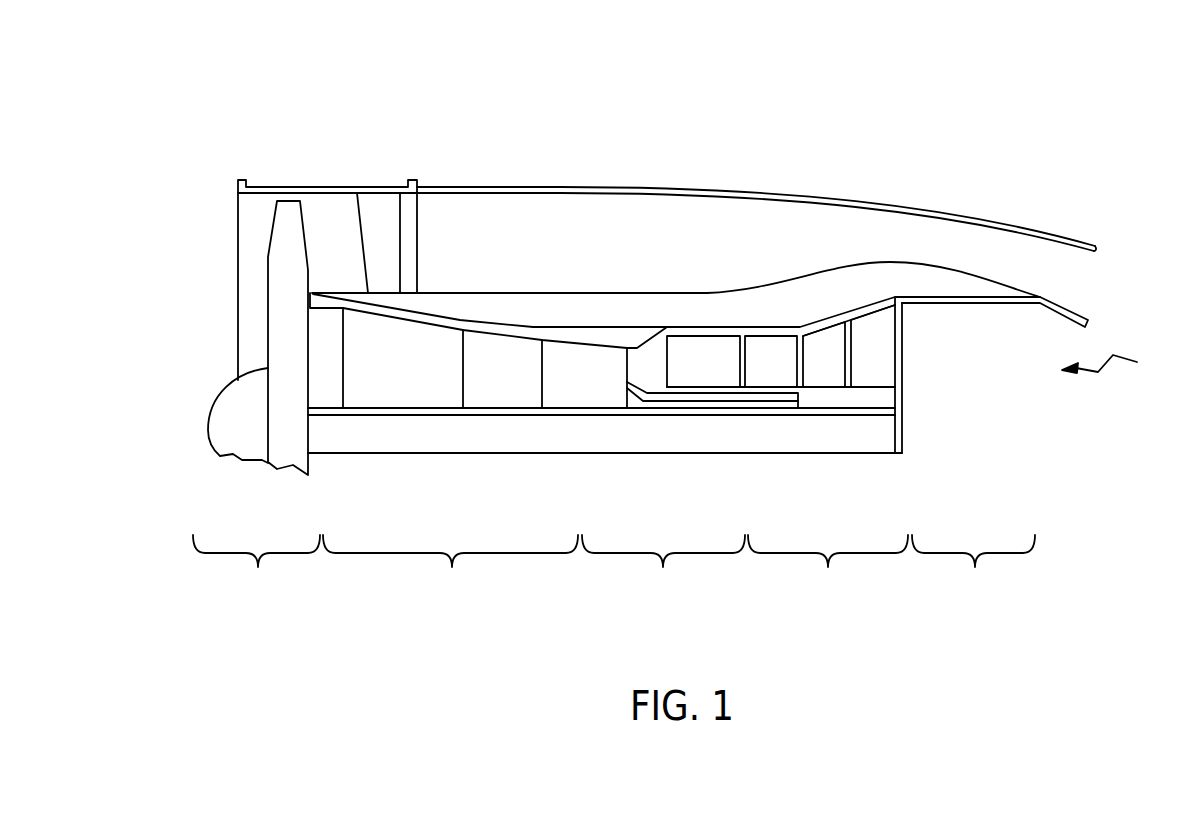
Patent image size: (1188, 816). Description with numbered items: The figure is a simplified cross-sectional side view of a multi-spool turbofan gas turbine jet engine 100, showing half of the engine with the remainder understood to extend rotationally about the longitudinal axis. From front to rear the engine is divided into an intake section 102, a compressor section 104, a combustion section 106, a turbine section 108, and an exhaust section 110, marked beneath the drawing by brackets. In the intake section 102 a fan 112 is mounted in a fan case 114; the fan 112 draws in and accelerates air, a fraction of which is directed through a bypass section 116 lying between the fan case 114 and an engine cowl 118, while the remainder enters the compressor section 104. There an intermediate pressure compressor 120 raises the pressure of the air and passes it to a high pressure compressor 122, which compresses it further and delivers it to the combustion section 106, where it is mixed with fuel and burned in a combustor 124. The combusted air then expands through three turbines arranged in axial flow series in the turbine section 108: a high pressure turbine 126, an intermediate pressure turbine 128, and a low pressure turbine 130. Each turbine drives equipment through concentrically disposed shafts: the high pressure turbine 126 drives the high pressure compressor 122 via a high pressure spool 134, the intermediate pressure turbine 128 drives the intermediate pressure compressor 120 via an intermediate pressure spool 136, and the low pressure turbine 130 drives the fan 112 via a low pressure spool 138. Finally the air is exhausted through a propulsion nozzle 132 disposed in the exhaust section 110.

The multi-spool turbofan gas turbine jet engine 100 is at (346, 214).
The intake section 102 is at (256, 569).
The compressor section 104 is at (450, 569).
The combustion section 106 is at (663, 569).
The turbine section 108 is at (828, 569).
The exhaust section 110 is at (973, 569).
The fan 112 is at (280, 293).
The fan case 114 is at (334, 187).
The bypass section 116 is at (590, 205).
The engine cowl 118 is at (659, 292).
The intermediate pressure compressor 120 is at (410, 398).
The high pressure compressor 122 is at (583, 400).
The combustor 124 is at (713, 348).
The high pressure turbine 126 is at (775, 348).
The intermediate pressure turbine 128 is at (828, 337).
The low pressure turbine 130 is at (884, 330).
The propulsion nozzle 132 is at (1125, 357).
The high pressure spool 134 is at (668, 396).
The intermediate pressure spool 136 is at (752, 412).
The low pressure spool 138 is at (818, 443).